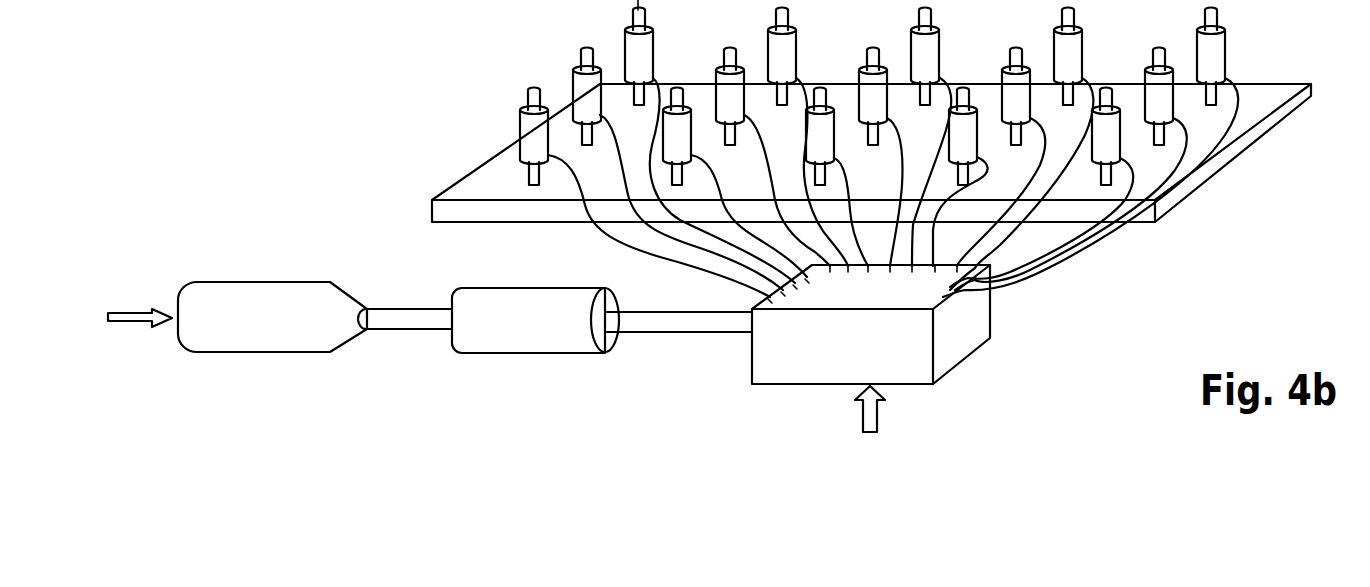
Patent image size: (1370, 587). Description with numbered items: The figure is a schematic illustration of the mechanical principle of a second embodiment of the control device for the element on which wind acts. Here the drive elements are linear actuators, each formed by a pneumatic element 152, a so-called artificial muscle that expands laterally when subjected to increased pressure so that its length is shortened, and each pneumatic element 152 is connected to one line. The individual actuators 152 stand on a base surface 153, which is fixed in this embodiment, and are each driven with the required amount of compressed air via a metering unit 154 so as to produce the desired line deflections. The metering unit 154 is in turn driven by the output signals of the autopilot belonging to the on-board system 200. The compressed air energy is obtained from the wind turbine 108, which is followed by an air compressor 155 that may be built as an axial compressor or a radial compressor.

The wind turbine 108 is at (178, 300).
The pneumatic element 152 is at (645, 55).
The base surface 153 is at (1270, 98).
The metering unit 154 is at (975, 327).
The air compressor 155 is at (535, 342).
The on-board system 200 is at (857, 408).